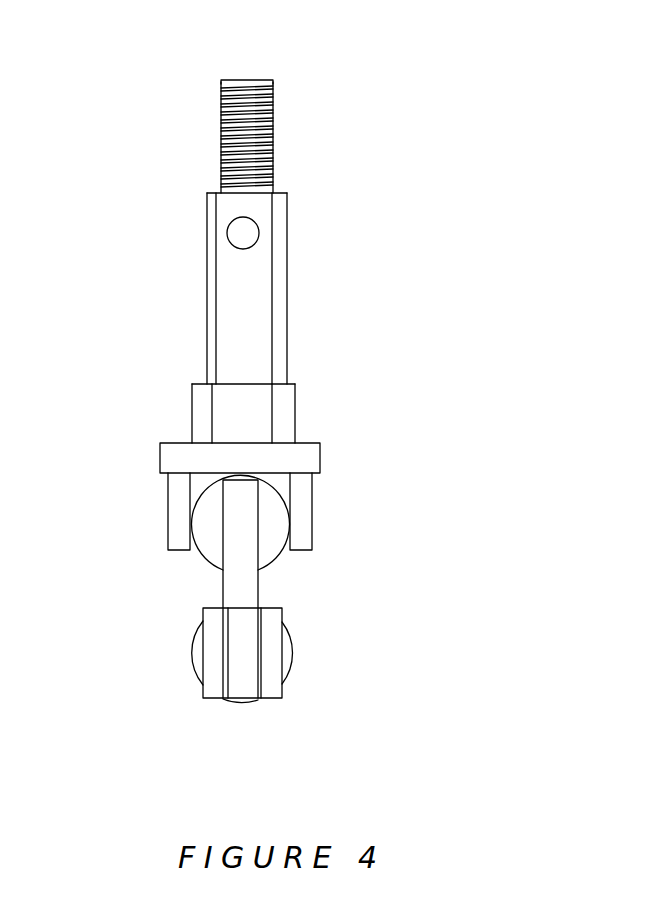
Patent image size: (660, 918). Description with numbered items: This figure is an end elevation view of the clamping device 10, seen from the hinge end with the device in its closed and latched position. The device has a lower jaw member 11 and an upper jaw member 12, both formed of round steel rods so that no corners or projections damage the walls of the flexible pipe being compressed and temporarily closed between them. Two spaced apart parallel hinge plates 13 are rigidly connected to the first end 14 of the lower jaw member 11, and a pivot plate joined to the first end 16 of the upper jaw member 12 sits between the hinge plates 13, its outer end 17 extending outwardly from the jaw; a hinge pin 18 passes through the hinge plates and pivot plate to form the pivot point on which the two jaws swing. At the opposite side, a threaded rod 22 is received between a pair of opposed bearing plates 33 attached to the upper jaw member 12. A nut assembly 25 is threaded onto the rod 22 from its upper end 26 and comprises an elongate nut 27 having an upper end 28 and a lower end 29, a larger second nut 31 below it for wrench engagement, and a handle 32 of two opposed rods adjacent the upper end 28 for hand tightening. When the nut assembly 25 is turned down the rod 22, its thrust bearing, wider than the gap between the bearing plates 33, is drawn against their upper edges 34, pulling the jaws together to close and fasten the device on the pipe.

The clamping device 10 is at (428, 432).
The lower jaw member 11 is at (193, 652).
The upper jaw member 12 is at (207, 567).
The hinge plates 13 is at (268, 653).
The first end of lower jaw 14 is at (293, 637).
The first end of upper jaw 16 is at (273, 532).
The outer end of pivot plate 17 is at (243, 702).
The hinge pin 18 is at (283, 678).
The threaded rod 22 is at (273, 137).
The nut assembly 25 is at (297, 353).
The upper end of rod 26 is at (253, 80).
The elongate nut 27 is at (222, 297).
The upper end of elongate nut 28 is at (215, 192).
The lower end of elongate nut 29 is at (240, 382).
The second nut 31 is at (227, 417).
The handle 32 is at (250, 228).
The bearing plates 33 is at (178, 503).
The upper edges of bearing plates 34 is at (180, 453).